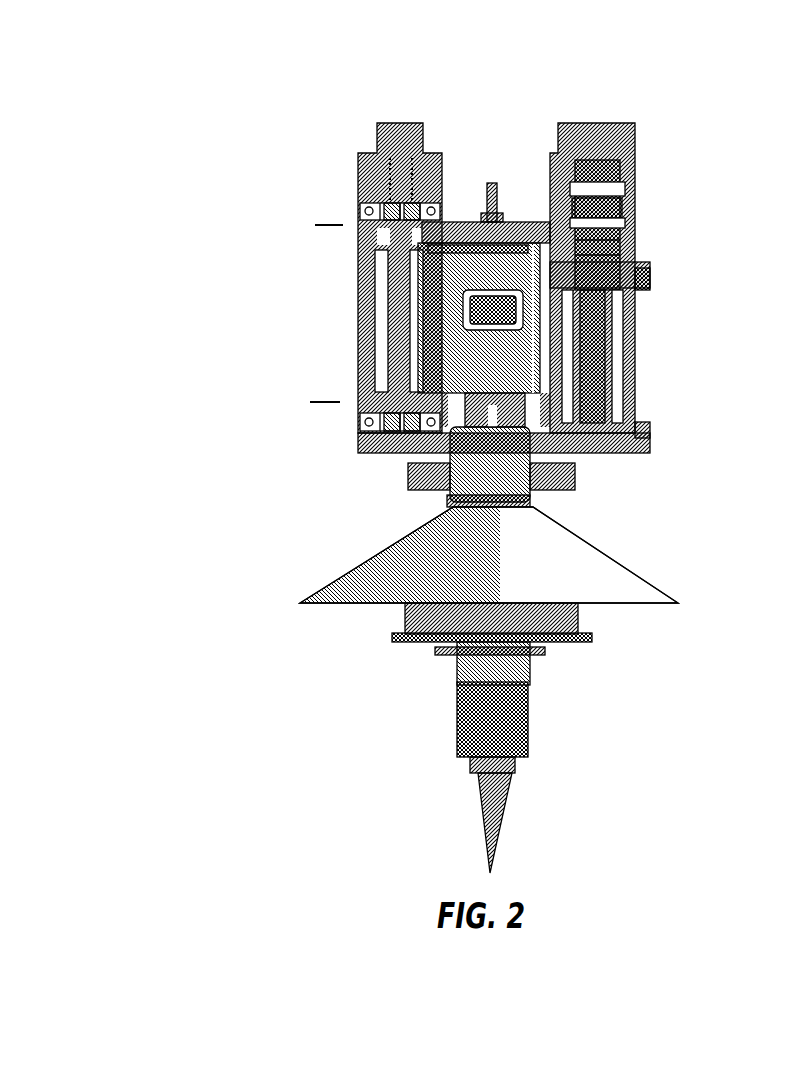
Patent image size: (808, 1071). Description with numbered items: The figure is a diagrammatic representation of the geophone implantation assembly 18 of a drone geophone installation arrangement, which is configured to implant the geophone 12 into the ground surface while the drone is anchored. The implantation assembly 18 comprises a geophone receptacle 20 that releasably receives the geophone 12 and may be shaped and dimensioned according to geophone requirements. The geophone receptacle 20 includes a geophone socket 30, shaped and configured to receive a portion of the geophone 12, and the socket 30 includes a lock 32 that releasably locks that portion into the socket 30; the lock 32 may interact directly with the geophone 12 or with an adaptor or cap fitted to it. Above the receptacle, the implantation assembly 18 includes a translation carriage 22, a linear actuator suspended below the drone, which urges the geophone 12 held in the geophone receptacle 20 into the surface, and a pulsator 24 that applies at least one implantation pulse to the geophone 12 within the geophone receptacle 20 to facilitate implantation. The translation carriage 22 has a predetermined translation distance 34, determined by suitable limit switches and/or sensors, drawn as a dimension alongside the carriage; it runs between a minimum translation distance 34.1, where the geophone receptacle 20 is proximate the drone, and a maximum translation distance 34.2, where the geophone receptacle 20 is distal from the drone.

The geophone 12 is at (457, 718).
The geophone implantation assembly 18 is at (483, 467).
The geophone receptacle 20 is at (340, 620).
The translation carriage 22 is at (662, 346).
The pulsator 24 is at (515, 267).
The geophone socket 30 is at (608, 628).
The lock 32 is at (405, 482).
The predetermined translation distance 34 is at (327, 232).
The minimum translation distance 34.1 is at (327, 225).
The maximum translation distance 34.2 is at (327, 404).